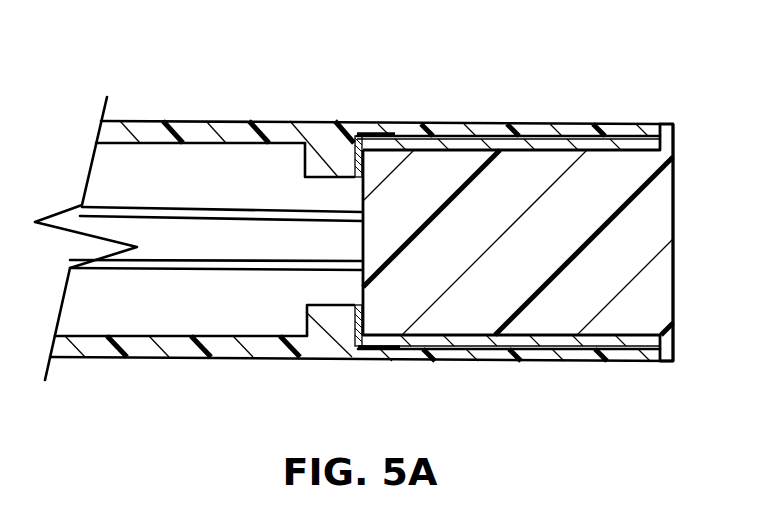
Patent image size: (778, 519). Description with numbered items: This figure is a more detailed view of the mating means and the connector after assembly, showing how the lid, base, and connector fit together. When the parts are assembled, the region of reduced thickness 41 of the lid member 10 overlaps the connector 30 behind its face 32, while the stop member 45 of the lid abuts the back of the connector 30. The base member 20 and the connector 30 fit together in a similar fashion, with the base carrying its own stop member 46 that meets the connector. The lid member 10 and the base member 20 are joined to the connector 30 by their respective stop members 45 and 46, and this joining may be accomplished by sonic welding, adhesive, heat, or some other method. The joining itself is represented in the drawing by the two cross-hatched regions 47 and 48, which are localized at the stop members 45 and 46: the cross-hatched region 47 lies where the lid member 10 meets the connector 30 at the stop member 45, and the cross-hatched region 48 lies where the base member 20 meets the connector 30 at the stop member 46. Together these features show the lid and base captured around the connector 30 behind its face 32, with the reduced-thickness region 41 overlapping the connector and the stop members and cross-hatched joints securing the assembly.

The lid member 10 is at (210, 100).
The base member 20 is at (178, 372).
The connector 30 is at (588, 188).
The face 32 is at (675, 193).
The region of reduced thickness 41 is at (542, 125).
The stop member 45 is at (327, 153).
The stop member 46 is at (332, 327).
The cross-hatched region 47 is at (356, 135).
The cross-hatched region 48 is at (362, 355).